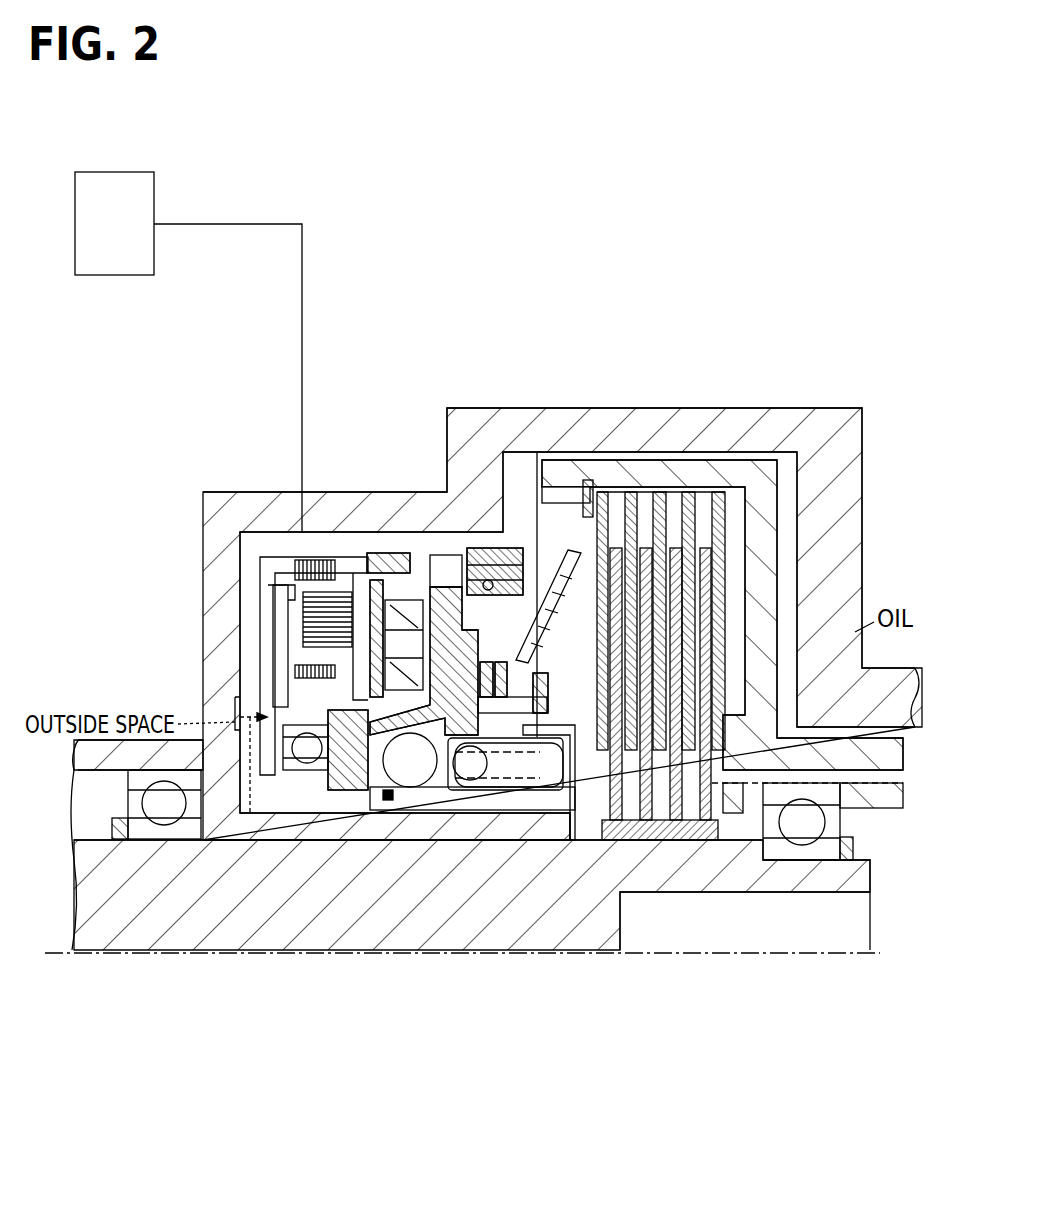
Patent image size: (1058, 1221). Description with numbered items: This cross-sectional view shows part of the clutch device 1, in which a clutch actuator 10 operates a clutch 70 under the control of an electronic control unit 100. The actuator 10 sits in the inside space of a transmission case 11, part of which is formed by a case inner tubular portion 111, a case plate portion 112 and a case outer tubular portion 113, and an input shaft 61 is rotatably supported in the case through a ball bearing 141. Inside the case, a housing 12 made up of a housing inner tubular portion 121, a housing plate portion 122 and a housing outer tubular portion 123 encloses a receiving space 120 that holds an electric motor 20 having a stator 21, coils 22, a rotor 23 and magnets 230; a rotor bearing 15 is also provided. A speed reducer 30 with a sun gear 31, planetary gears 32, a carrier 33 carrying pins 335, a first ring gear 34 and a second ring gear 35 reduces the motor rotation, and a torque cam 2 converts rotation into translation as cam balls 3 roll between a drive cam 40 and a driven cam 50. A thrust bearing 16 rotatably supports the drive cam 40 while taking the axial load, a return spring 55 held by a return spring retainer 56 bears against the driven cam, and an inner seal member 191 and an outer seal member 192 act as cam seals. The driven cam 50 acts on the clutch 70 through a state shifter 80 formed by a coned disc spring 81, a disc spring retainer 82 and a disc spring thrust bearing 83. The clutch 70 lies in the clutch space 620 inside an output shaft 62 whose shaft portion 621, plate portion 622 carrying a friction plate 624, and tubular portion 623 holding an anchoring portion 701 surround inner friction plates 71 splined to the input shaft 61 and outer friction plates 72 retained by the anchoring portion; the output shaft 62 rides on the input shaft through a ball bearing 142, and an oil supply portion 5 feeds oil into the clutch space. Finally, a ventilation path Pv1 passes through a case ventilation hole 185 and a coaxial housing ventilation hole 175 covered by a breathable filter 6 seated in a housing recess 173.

The clutch device 1 is at (600, 210).
The torque cam 2 is at (415, 775).
The cam balls 3 is at (400, 790).
The oil supply portion 5 is at (865, 760).
The breathable filter 6 is at (240, 717).
The clutch actuator 10 is at (265, 540).
The transmission case 11 is at (227, 510).
The housing 12 is at (282, 548).
The rotor bearing 15 is at (300, 775).
The thrust bearing 16 is at (355, 760).
The electric motor 20 is at (262, 640).
The stator 21 is at (275, 580).
The coils 22 is at (300, 598).
The rotor 23 is at (335, 790).
The speed reducer 30 is at (395, 555).
The sun gear 31 is at (375, 800).
The planetary gears 32 is at (477, 627).
The carrier 33 is at (340, 662).
The first ring gear 34 is at (380, 580).
The second ring gear 35 is at (420, 555).
The drive cam 40 is at (385, 805).
The driven cam 50 is at (418, 760).
The return spring 55 is at (505, 770).
The return spring retainer 56 is at (575, 790).
The input shaft 61 is at (95, 900).
The output shaft 62 is at (885, 745).
The clutch 70 is at (673, 540).
The inner friction plates 71 is at (672, 840).
The outer friction plates 72 is at (695, 545).
The state shifter 80 is at (588, 500).
The coned disc spring 81 is at (572, 548).
The disc spring retainer 82 is at (525, 710).
The disc spring thrust bearing 83 is at (508, 678).
The electronic control unit 100 is at (118, 188).
The case inner tubular portion 111 is at (470, 790).
The case plate portion 112 is at (238, 700).
The case outer tubular portion 113 is at (350, 517).
The receiving space 120 is at (285, 612).
The housing inner tubular portion 121 is at (520, 790).
The housing plate portion 122 is at (290, 640).
The housing outer tubular portion 123 is at (327, 545).
The ball bearing 141 is at (165, 805).
The ball bearing 142 is at (812, 825).
The housing recess 173 is at (330, 690).
The housing ventilation hole 175 is at (250, 730).
The case ventilation hole 185 is at (218, 770).
The inner seal member 191 is at (398, 800).
The outer seal member 192 is at (495, 552).
The magnets 230 is at (310, 668).
The pins 335 is at (548, 651).
The clutch space 620 is at (718, 545).
The shaft portion 621 is at (890, 760).
The plate portion 622 is at (775, 583).
The tubular portion 623 is at (642, 543).
The friction plate 624 is at (735, 552).
The anchoring portion 701 is at (608, 545).
The ventilation path Pv1 is at (243, 800).